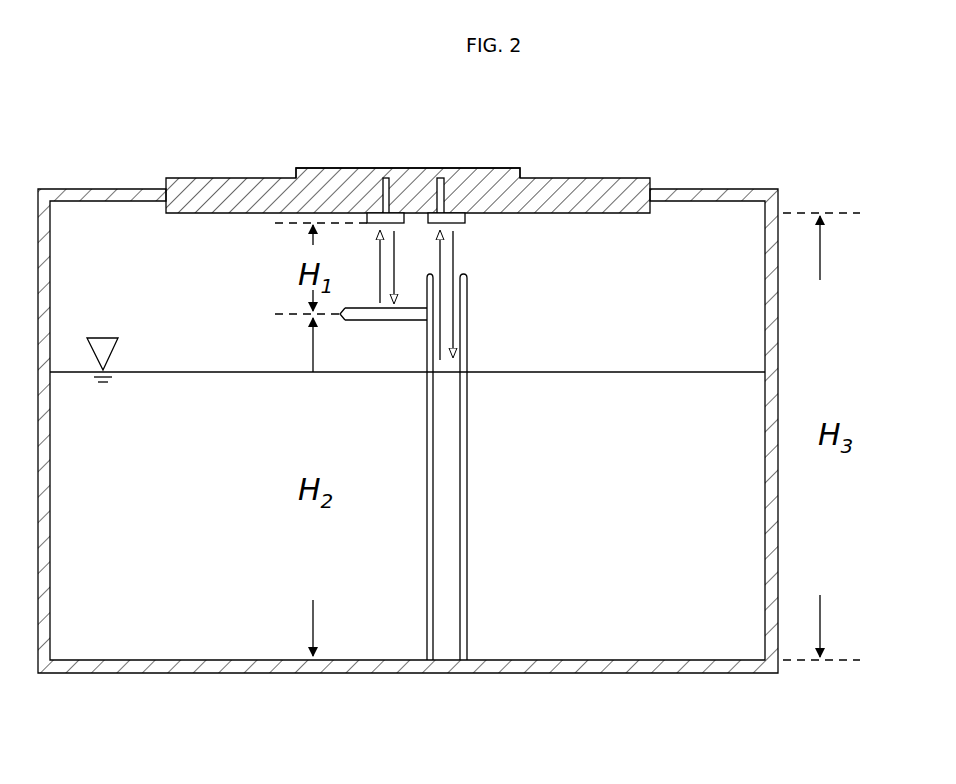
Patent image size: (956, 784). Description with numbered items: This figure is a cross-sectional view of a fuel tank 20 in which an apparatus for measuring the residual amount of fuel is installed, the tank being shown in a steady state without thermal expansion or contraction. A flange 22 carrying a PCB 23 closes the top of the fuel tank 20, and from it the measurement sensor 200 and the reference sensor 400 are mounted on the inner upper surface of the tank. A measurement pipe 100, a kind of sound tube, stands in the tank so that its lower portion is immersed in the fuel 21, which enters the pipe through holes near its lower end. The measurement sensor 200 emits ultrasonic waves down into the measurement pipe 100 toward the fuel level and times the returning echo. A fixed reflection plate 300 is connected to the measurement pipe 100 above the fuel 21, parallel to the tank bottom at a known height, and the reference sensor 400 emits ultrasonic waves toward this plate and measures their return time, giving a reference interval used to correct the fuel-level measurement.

The fuel tank 20 is at (92, 190).
The fuel 21 is at (187, 370).
The flange 22 is at (200, 178).
The PCB 23 is at (300, 168).
The measurement pipe 100 is at (468, 665).
The measurement sensor 200 is at (441, 180).
The fixed reflection plate 300 is at (373, 322).
The reference sensor 400 is at (384, 180).